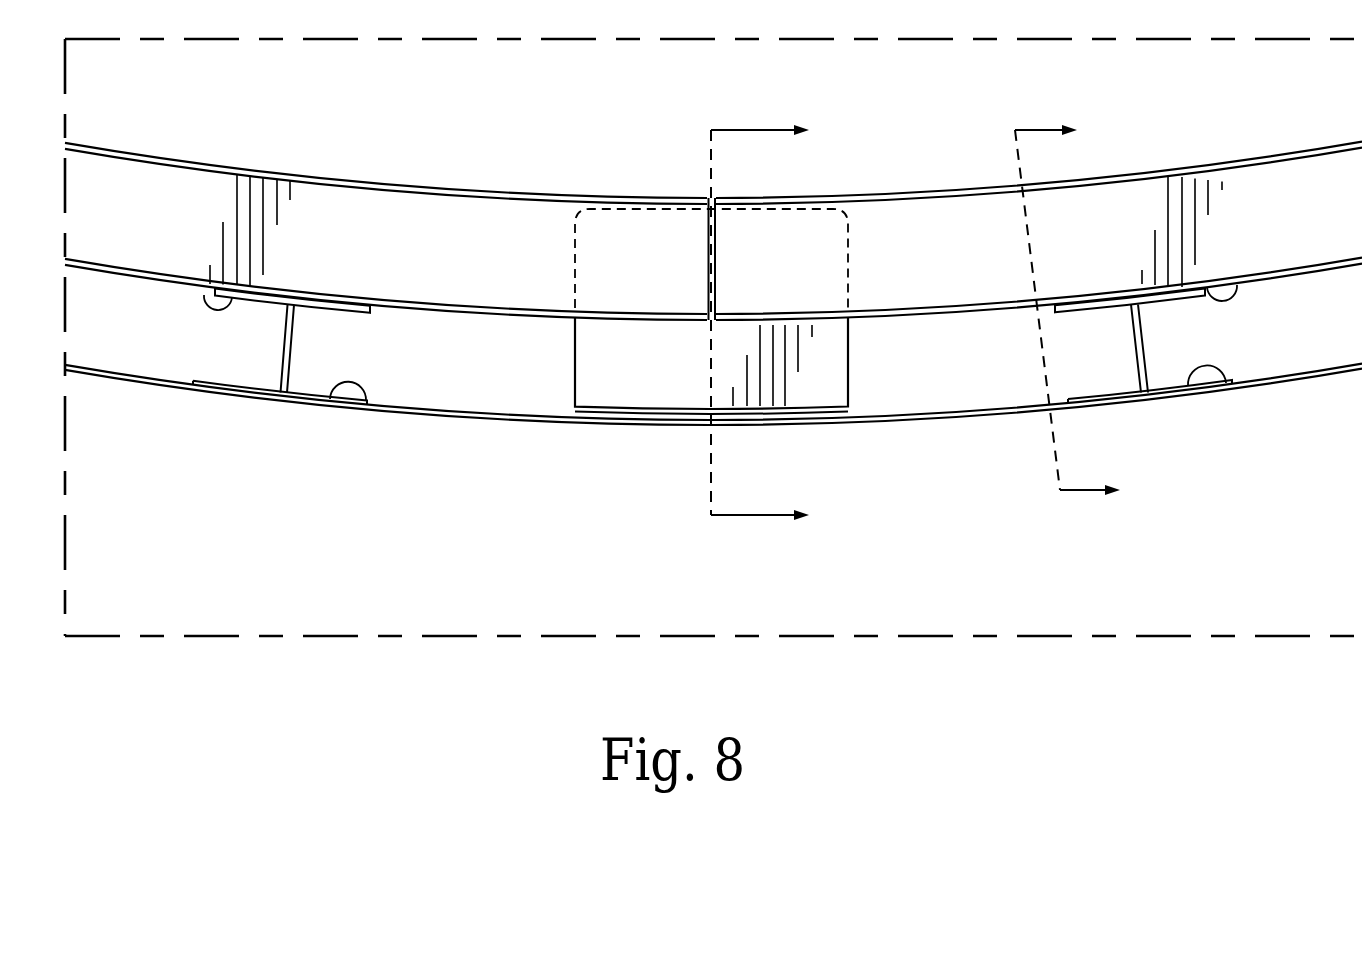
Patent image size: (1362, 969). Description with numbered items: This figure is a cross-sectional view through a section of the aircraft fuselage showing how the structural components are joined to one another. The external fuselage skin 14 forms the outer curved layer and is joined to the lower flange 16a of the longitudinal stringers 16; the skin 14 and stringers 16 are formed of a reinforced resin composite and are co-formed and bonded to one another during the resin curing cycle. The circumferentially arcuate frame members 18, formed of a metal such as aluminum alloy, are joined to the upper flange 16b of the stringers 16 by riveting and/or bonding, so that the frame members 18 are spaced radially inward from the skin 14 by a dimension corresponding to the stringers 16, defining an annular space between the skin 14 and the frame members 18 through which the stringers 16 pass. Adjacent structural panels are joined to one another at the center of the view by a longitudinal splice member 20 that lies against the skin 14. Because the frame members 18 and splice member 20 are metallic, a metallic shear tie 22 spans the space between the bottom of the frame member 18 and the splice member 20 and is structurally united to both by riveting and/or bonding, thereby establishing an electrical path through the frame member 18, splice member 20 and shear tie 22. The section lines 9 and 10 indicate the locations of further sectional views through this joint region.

The section line 9- 9 is at (1081, 311).
The section line 10- 10 is at (780, 327).
The external fuselage skin 14 is at (172, 383).
The longitudinal stringer 16 is at (292, 357).
The lower flange 16a is at (366, 405).
The upper flange 16b is at (228, 298).
The frame member 18 is at (369, 256).
The longitudinal splice member 20 is at (646, 424).
The shear tie 22 is at (656, 376).